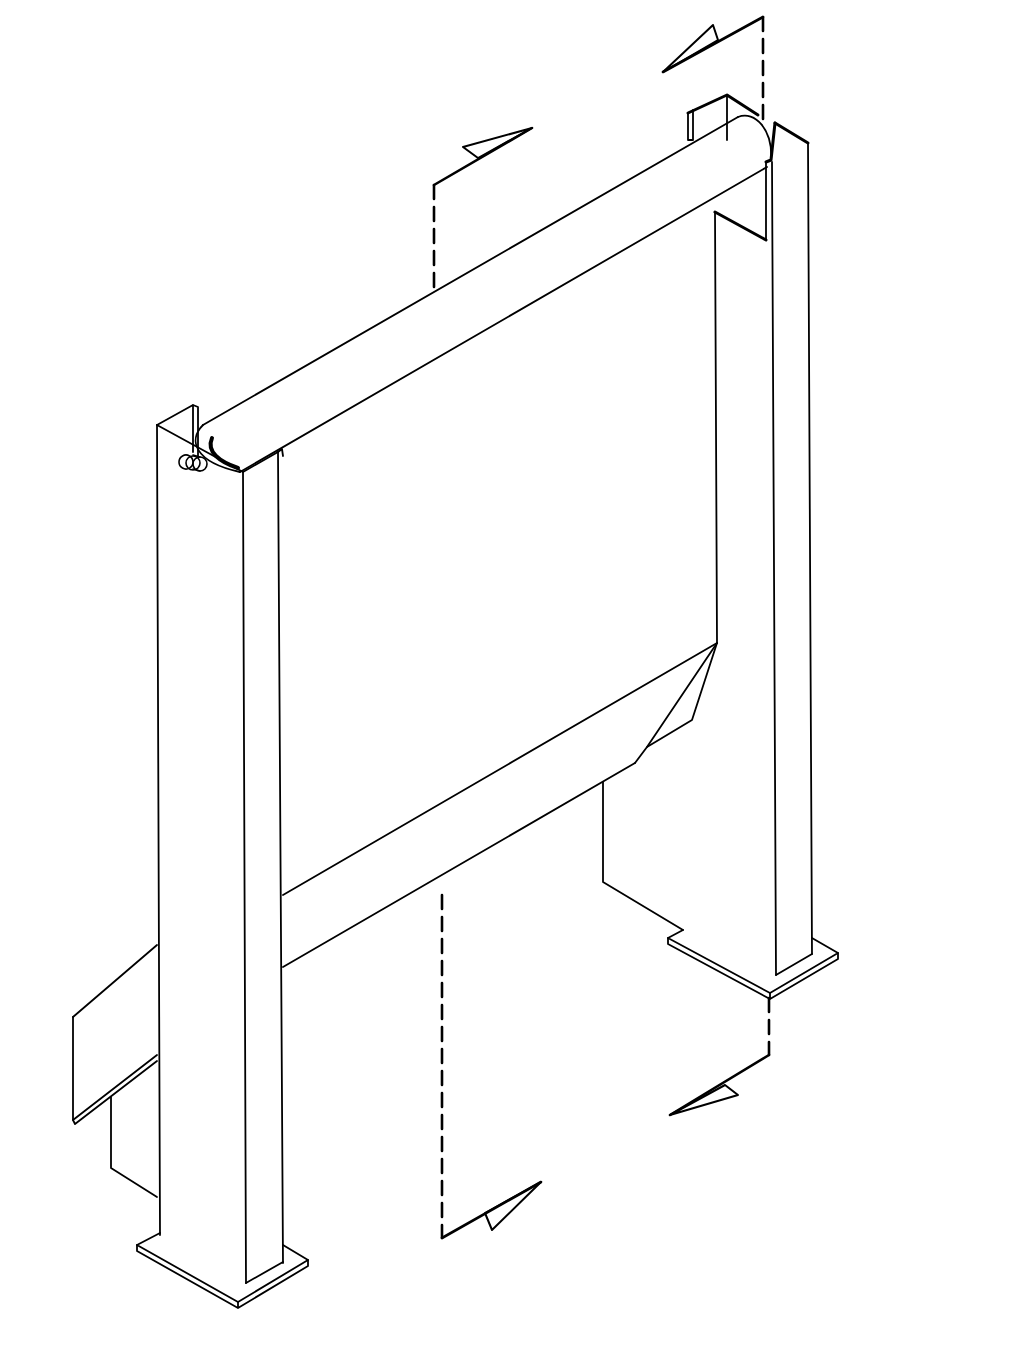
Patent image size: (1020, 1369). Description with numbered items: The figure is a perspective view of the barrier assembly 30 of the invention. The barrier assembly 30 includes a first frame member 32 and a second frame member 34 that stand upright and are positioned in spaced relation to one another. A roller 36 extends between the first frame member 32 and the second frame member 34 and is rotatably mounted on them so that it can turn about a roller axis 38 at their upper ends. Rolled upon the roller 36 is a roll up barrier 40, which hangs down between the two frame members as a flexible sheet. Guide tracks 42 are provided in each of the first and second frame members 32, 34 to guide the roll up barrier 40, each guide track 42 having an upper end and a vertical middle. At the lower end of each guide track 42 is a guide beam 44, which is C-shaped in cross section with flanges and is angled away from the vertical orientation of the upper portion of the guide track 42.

The barrier assembly 30 is at (327, 268).
The first frame member 32 is at (158, 683).
The second frame member 34 is at (822, 538).
The roller 36 is at (337, 357).
The roller axis 38 is at (195, 470).
The roll up barrier 40 is at (704, 578).
The guide track 42 is at (703, 678).
The guide beam 44 is at (128, 982).